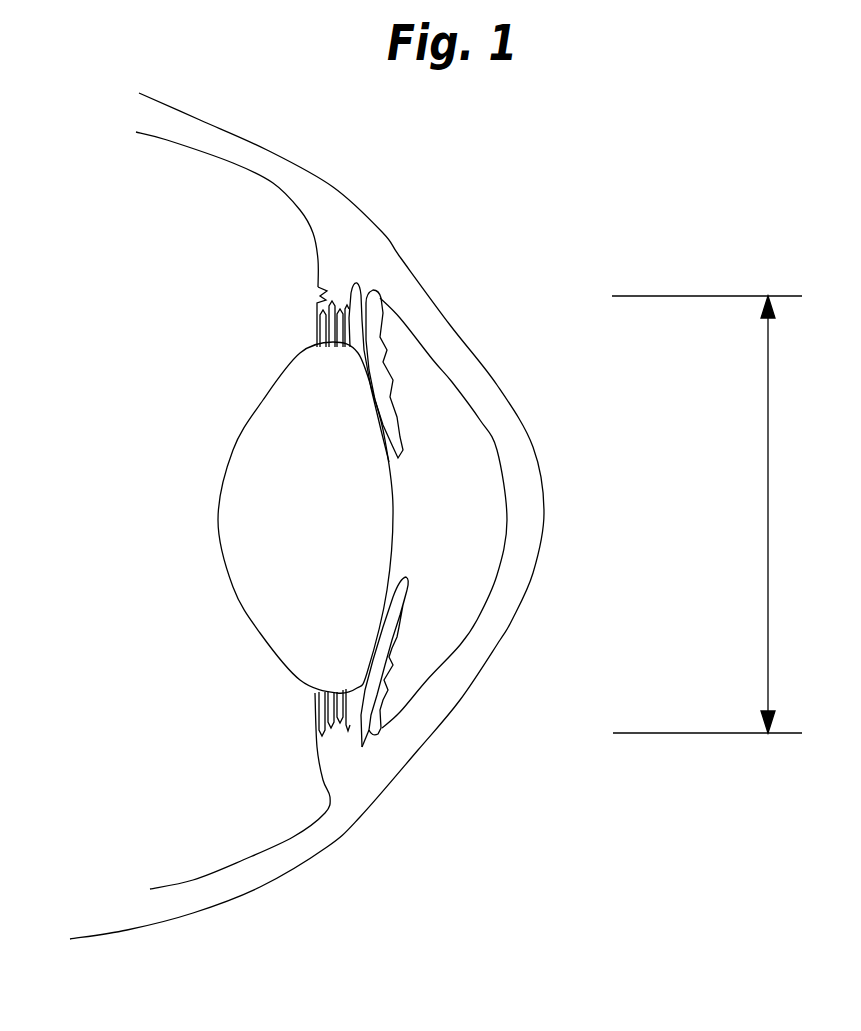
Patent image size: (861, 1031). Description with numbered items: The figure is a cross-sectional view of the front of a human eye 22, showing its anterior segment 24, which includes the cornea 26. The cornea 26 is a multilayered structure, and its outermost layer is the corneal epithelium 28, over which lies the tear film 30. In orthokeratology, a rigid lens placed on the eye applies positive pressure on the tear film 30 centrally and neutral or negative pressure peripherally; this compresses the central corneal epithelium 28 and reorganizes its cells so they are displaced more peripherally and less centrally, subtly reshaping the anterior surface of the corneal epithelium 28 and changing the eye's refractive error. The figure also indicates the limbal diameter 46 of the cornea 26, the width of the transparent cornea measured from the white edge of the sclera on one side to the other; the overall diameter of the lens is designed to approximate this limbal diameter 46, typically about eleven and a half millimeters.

The eye 22 is at (462, 252).
The anterior segment 24 is at (447, 717).
The cornea 26 is at (462, 653).
The corneal epithelium 28 is at (533, 583).
The tear film 30 is at (543, 545).
The limbal diameter 46 is at (767, 468).